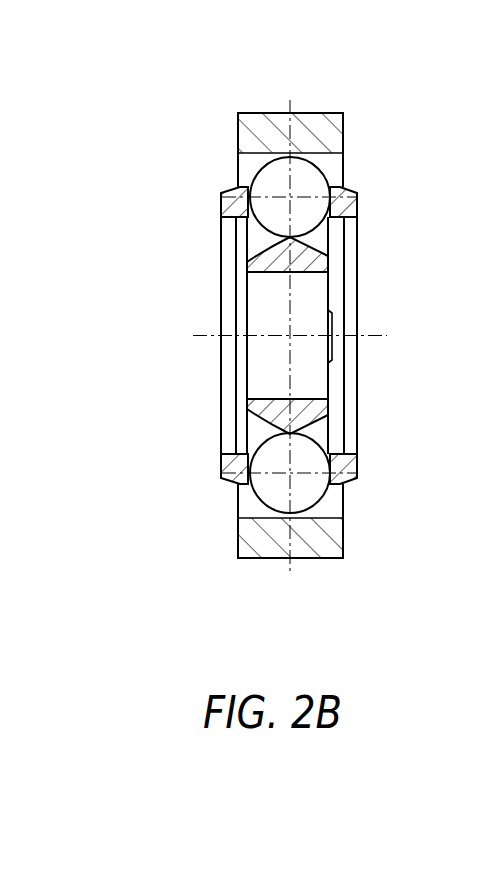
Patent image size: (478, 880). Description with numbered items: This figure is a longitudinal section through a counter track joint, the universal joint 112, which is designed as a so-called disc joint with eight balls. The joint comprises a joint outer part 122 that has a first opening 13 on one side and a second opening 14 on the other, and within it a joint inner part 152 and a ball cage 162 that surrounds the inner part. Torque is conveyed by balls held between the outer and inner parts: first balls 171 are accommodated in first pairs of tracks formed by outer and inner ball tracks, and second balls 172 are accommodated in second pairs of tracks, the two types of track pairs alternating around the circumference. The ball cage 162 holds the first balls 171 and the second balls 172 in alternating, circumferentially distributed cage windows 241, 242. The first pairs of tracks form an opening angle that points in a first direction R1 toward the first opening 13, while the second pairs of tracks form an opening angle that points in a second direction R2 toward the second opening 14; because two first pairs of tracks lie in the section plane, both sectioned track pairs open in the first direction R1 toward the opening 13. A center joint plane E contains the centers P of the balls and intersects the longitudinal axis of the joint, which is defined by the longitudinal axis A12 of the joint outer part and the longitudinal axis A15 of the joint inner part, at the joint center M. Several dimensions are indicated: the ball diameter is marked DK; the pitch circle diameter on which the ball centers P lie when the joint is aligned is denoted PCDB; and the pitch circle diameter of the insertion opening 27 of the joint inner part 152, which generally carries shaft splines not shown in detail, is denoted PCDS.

The universal joint 112 is at (370, 74).
The joint outer part 122 is at (337, 130).
The ball cage 162 is at (347, 203).
The joint inner part 152 is at (330, 252).
The insertion opening 27 is at (322, 297).
The first balls 171 is at (272, 182).
The second balls 172 is at (274, 502).
The cage windows 241 is at (260, 183).
The cage windows 242 is at (262, 508).
The first opening 13 is at (217, 502).
The second opening 14 is at (366, 508).
The center joint plane E is at (318, 555).
The centers of the balls P is at (292, 197).
The joint center M is at (289, 337).
The longitudinal axis of the joint outer part A12 is at (372, 337).
The longitudinal axis of the joint inner part A15 is at (212, 333).
The ball diameter DK is at (330, 110).
The pitch circle diameter of the ball centers PCDB is at (225, 472).
The pitch circle diameter of the insertion opening PCDS is at (247, 272).
The first direction R1 is at (170, 168).
The second direction R2 is at (387, 468).